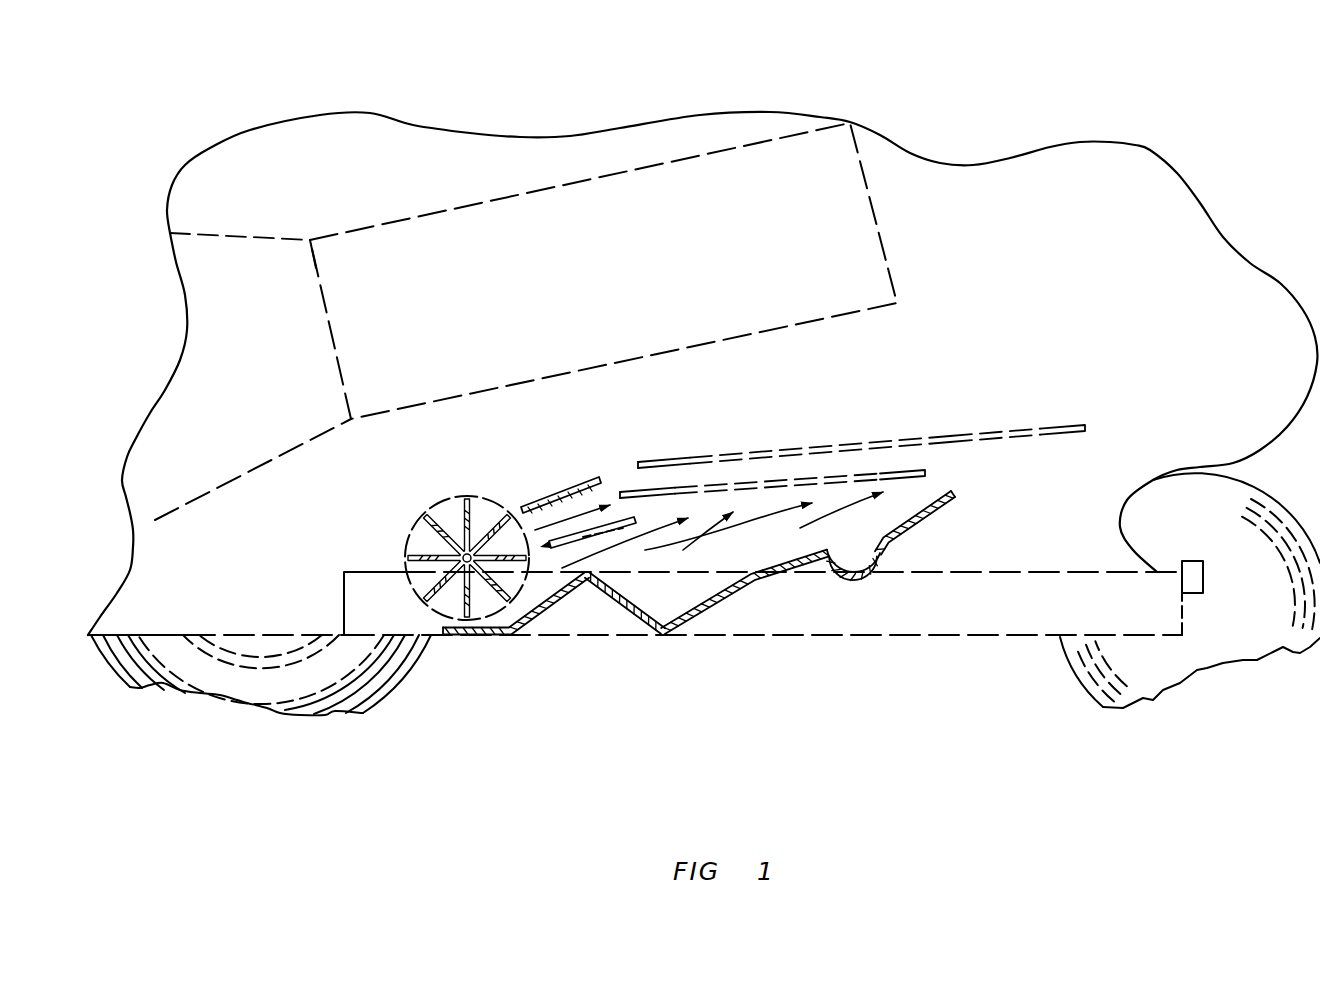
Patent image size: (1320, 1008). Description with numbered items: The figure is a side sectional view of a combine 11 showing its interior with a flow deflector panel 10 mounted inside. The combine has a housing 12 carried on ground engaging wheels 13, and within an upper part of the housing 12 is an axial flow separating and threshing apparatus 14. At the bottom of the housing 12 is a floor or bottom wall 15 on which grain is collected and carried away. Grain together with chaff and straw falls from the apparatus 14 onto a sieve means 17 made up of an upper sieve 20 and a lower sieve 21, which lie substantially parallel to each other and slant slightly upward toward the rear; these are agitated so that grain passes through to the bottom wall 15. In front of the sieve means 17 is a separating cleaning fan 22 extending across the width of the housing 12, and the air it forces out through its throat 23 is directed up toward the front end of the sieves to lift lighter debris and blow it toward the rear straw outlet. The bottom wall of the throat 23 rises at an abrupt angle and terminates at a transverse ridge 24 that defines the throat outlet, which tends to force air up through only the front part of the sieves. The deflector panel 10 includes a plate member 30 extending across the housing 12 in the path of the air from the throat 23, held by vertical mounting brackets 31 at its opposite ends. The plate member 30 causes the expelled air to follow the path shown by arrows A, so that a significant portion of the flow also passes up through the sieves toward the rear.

The flow deflector panel 10 is at (604, 550).
The combine 11 is at (988, 157).
The housing 12 is at (237, 603).
The ground engaging wheels 13 is at (403, 683).
The axial flow separating and threshing apparatus 14 is at (553, 187).
The bottom wall 15 is at (683, 636).
The sieve means 17 is at (828, 432).
The upper sieve 20 is at (1015, 427).
The lower sieve 21 is at (907, 467).
The separating cleaning fan 22 is at (453, 498).
The throat 23 is at (535, 582).
The transverse ridge 24 is at (557, 578).
The plate member 30 is at (640, 543).
The mounting brackets 31 is at (641, 543).
The arrows A is at (653, 550).